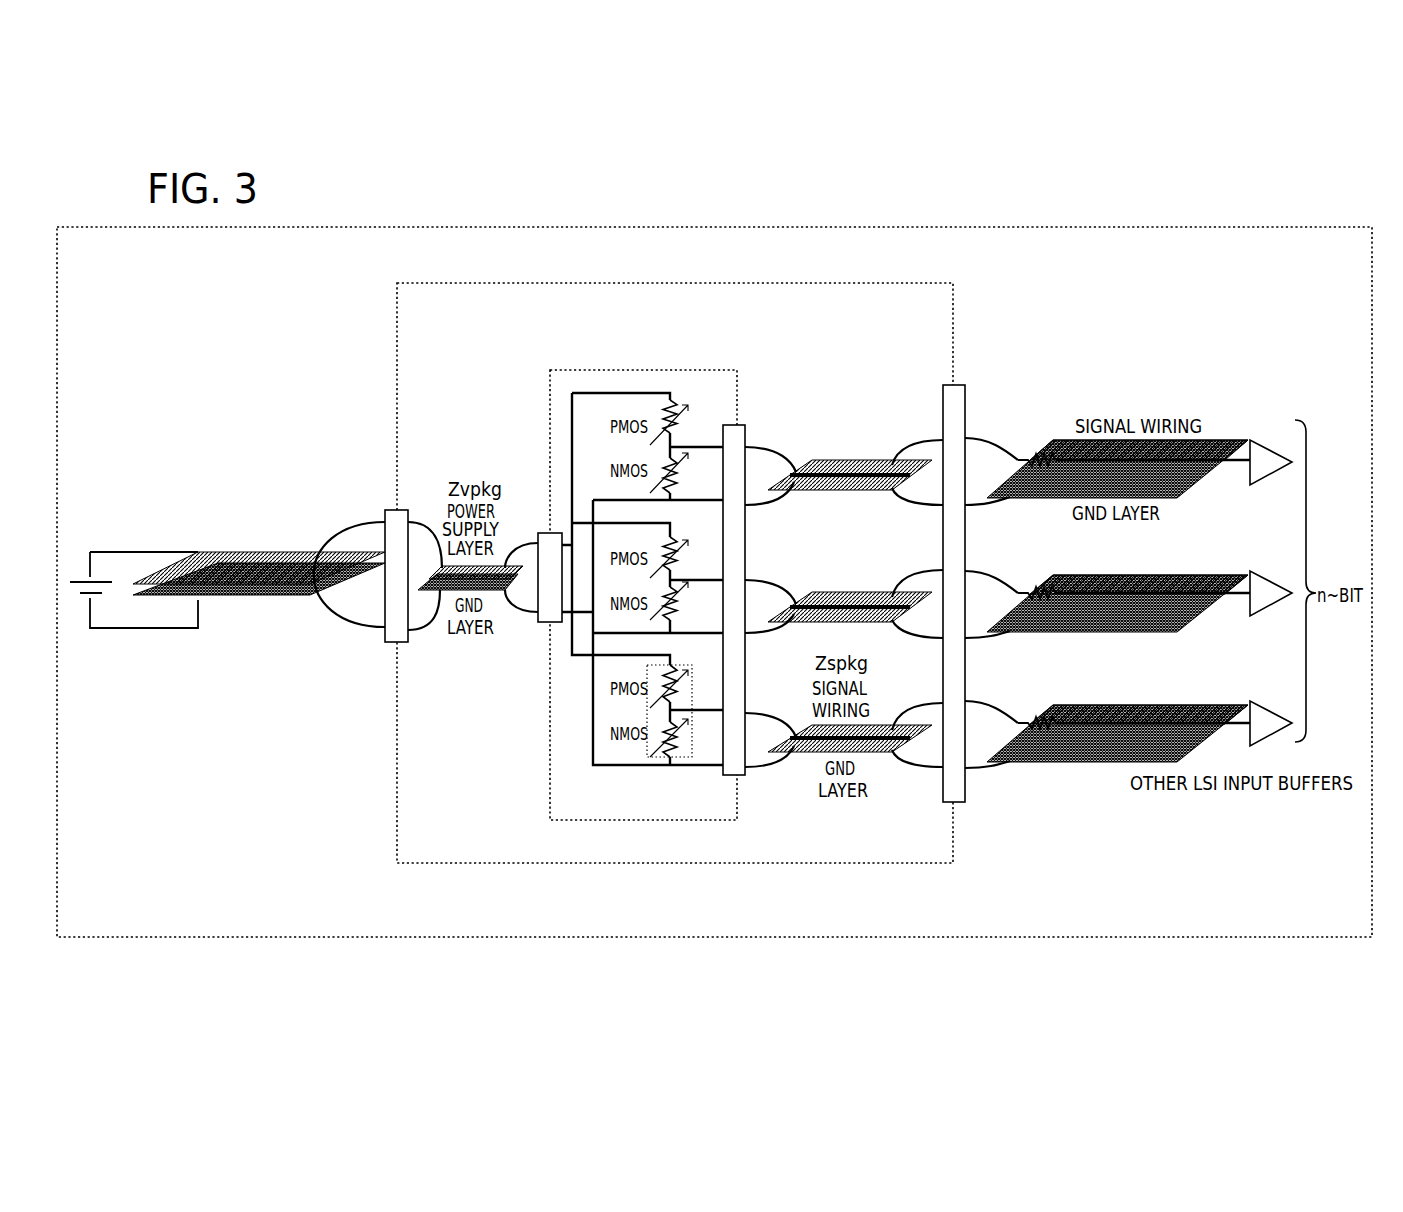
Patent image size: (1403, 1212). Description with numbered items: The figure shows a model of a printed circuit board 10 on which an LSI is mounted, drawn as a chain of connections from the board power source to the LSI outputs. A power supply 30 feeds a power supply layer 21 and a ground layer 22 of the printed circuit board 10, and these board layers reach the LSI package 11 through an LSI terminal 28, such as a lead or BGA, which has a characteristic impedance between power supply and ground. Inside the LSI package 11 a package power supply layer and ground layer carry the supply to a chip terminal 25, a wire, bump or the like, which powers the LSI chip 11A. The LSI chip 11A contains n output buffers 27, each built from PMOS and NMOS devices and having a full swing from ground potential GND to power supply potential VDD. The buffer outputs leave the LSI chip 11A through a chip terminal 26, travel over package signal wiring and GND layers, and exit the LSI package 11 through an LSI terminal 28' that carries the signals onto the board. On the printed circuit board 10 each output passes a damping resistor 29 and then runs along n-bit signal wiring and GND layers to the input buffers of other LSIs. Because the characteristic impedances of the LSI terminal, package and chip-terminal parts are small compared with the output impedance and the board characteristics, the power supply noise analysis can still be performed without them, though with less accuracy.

The printed circuit board 10 is at (560, 227).
The LSI package 11 is at (627, 281).
The LSI chip 11A is at (593, 369).
The power supply layer 21 is at (259, 545).
The ground layer 22 is at (259, 602).
The chip terminal 25 is at (547, 543).
The chip terminal 26 is at (735, 448).
The output buffer 27 is at (692, 743).
The LSI terminal 28 is at (289, 647).
The LSI terminal 28' is at (1122, 634).
The damping resistor 29 is at (1040, 440).
The power supply 30 is at (131, 575).